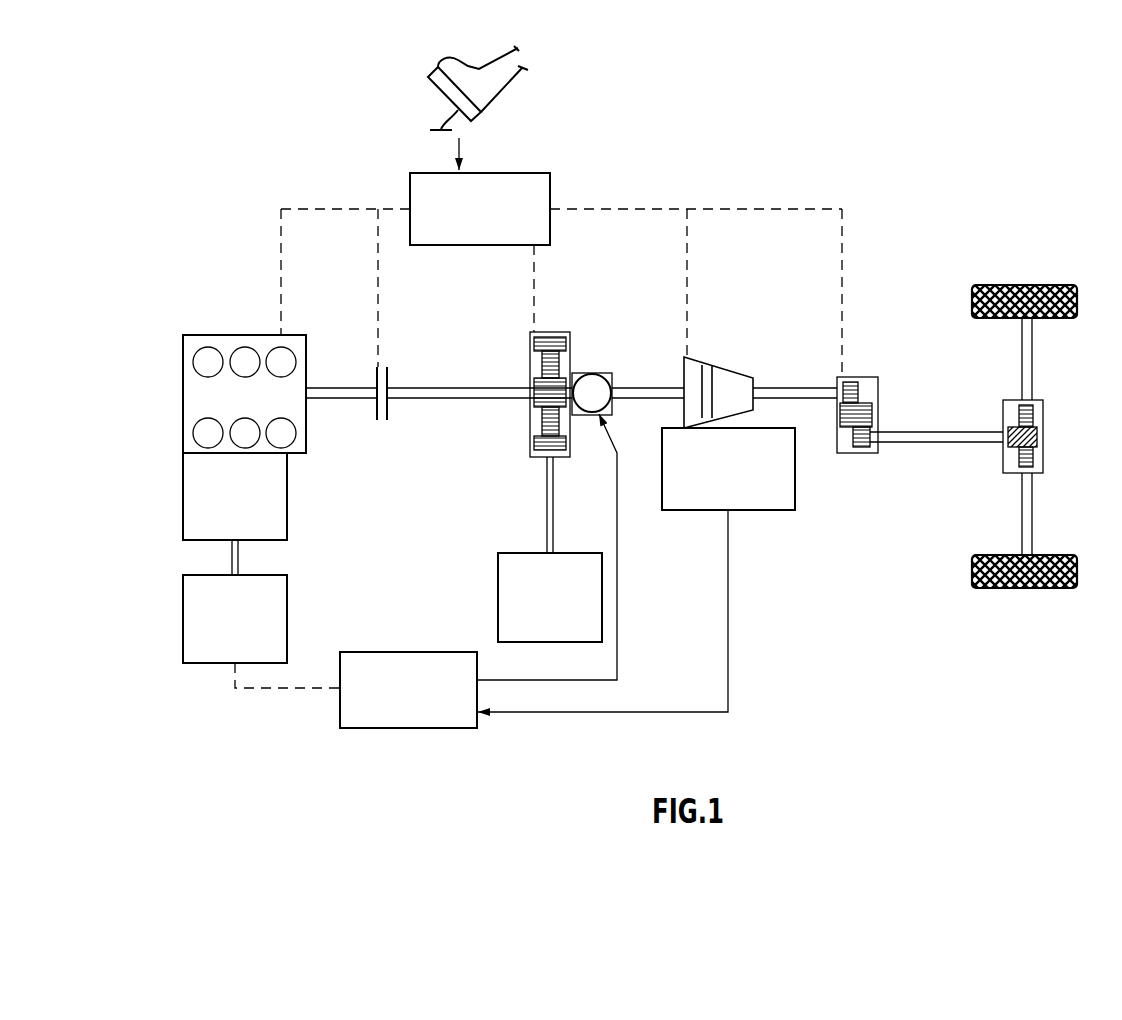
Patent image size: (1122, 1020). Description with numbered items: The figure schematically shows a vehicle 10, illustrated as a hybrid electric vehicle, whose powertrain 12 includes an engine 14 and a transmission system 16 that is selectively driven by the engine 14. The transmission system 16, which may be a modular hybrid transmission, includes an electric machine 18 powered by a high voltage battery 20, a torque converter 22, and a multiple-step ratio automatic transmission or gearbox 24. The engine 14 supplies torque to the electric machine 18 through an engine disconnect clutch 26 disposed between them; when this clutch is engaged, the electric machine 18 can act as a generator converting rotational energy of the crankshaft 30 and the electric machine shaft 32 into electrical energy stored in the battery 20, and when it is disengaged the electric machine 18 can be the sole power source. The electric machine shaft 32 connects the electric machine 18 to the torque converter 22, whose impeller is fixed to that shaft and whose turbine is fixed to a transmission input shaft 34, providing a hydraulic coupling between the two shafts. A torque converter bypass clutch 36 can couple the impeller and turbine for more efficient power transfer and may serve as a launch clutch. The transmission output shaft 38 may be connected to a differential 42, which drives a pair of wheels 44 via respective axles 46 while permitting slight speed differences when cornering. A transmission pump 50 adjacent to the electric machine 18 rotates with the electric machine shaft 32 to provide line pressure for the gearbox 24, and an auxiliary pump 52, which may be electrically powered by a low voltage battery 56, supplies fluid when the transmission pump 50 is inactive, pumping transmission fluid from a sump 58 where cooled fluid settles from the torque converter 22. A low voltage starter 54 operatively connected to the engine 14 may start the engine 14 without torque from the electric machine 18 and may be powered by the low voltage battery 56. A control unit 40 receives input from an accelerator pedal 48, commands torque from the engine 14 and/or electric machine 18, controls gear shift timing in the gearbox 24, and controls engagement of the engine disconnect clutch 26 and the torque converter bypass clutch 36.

The vehicle 10 is at (630, 118).
The powertrain 12 is at (447, 432).
The engine 14 is at (243, 333).
The transmission system 16 is at (780, 327).
The electric machine 18 is at (556, 332).
The high voltage battery 20 is at (497, 573).
The torque converter 22 is at (718, 363).
The gearbox 24 is at (866, 375).
The engine disconnect clutch 26 is at (384, 366).
The crankshaft 30 is at (322, 387).
The electric machine shaft 32 is at (437, 387).
The transmission input shaft 34 is at (790, 387).
The torque converter bypass clutch 36 is at (703, 366).
The transmission output shaft 38 is at (920, 443).
The control unit 40 is at (552, 193).
The differential 42 is at (1038, 437).
The wheels 44 is at (1043, 589).
The axles 46 is at (1033, 371).
The accelerator pedal 48 is at (434, 76).
The transmission pump 50 is at (597, 371).
The auxiliary pump 52 is at (383, 729).
The low voltage starter 54 is at (288, 500).
The low voltage battery 56 is at (288, 622).
The sump 58 is at (796, 497).